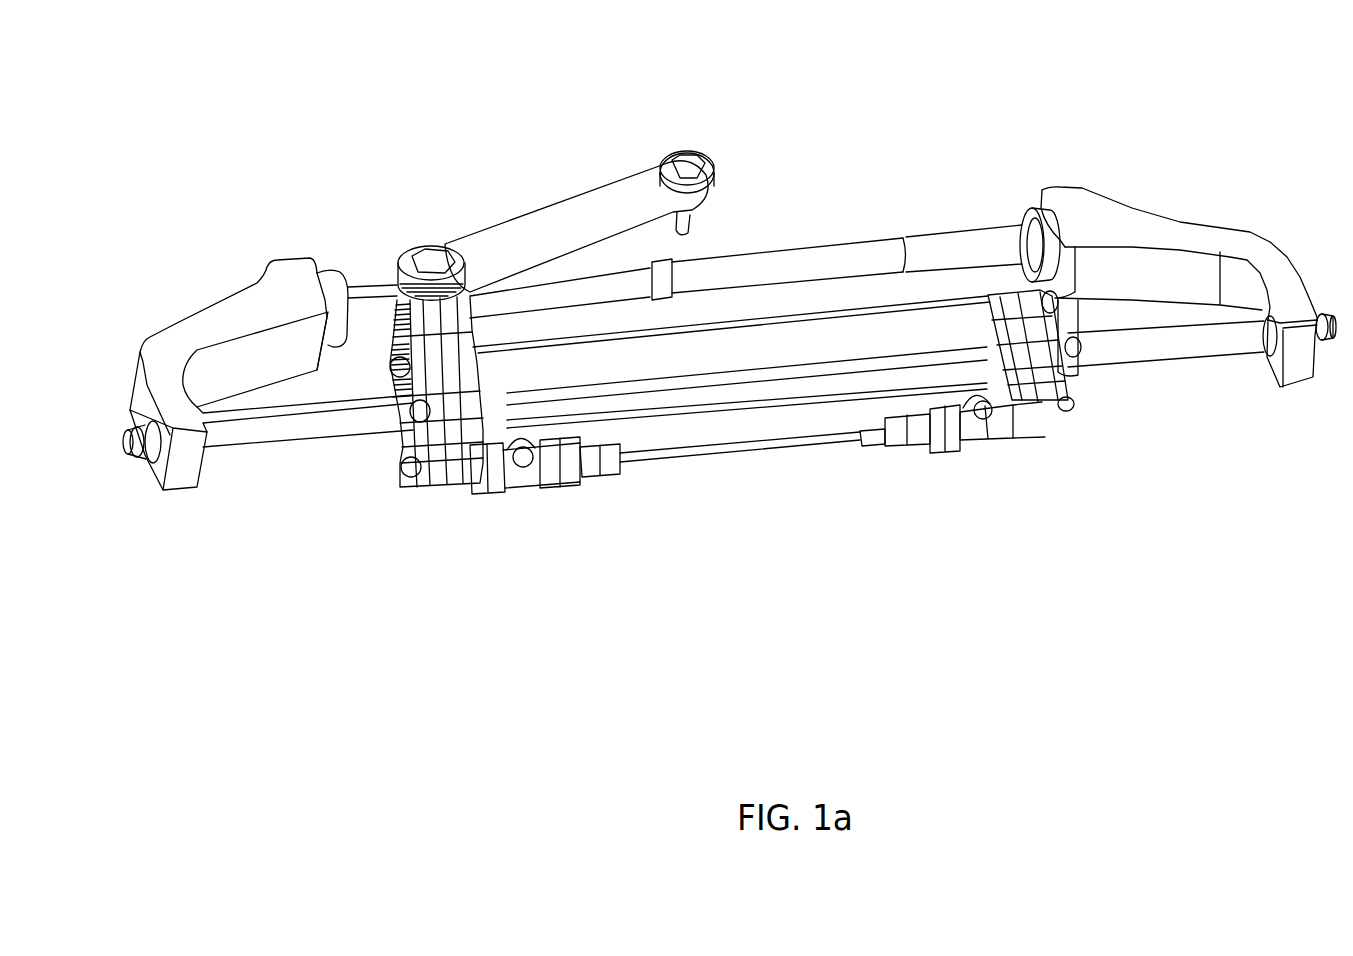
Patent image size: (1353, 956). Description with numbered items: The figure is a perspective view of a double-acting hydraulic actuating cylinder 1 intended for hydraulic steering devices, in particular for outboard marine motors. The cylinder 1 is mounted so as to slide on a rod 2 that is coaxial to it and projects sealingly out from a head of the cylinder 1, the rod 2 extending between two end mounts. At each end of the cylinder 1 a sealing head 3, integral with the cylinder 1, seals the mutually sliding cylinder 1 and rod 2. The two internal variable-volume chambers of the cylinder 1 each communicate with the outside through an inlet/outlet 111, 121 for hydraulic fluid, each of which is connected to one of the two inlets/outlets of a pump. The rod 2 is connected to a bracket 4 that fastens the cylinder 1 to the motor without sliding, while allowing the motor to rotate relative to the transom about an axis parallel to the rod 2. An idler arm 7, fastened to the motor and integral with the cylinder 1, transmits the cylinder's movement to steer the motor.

The actuating cylinder 1 is at (727, 430).
The rod 2 is at (243, 440).
The sealing head 3 is at (360, 449).
The bracket 4 is at (1043, 160).
The idler arm 7 is at (540, 223).
The inlet/outlet 111 is at (540, 483).
The inlet/outlet 121 is at (997, 437).